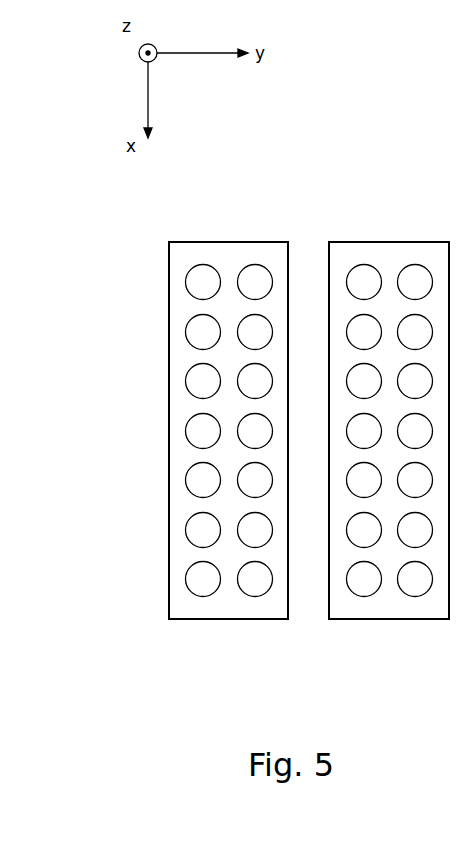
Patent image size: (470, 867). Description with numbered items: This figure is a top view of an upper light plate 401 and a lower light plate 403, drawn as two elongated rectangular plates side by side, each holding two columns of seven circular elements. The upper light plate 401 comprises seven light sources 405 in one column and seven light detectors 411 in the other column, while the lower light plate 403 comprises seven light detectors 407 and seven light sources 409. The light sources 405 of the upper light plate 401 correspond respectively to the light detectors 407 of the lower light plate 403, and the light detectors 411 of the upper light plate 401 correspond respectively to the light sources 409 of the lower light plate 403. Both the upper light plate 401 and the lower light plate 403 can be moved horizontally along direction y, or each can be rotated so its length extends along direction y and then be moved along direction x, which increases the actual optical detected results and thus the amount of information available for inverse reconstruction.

The upper light plate 401 is at (229, 242).
The lower light plate 403 is at (390, 242).
The light sources 405 is at (205, 597).
The light detectors 411 is at (254, 597).
The light detectors 407 is at (366, 597).
The light sources 409 is at (415, 597).